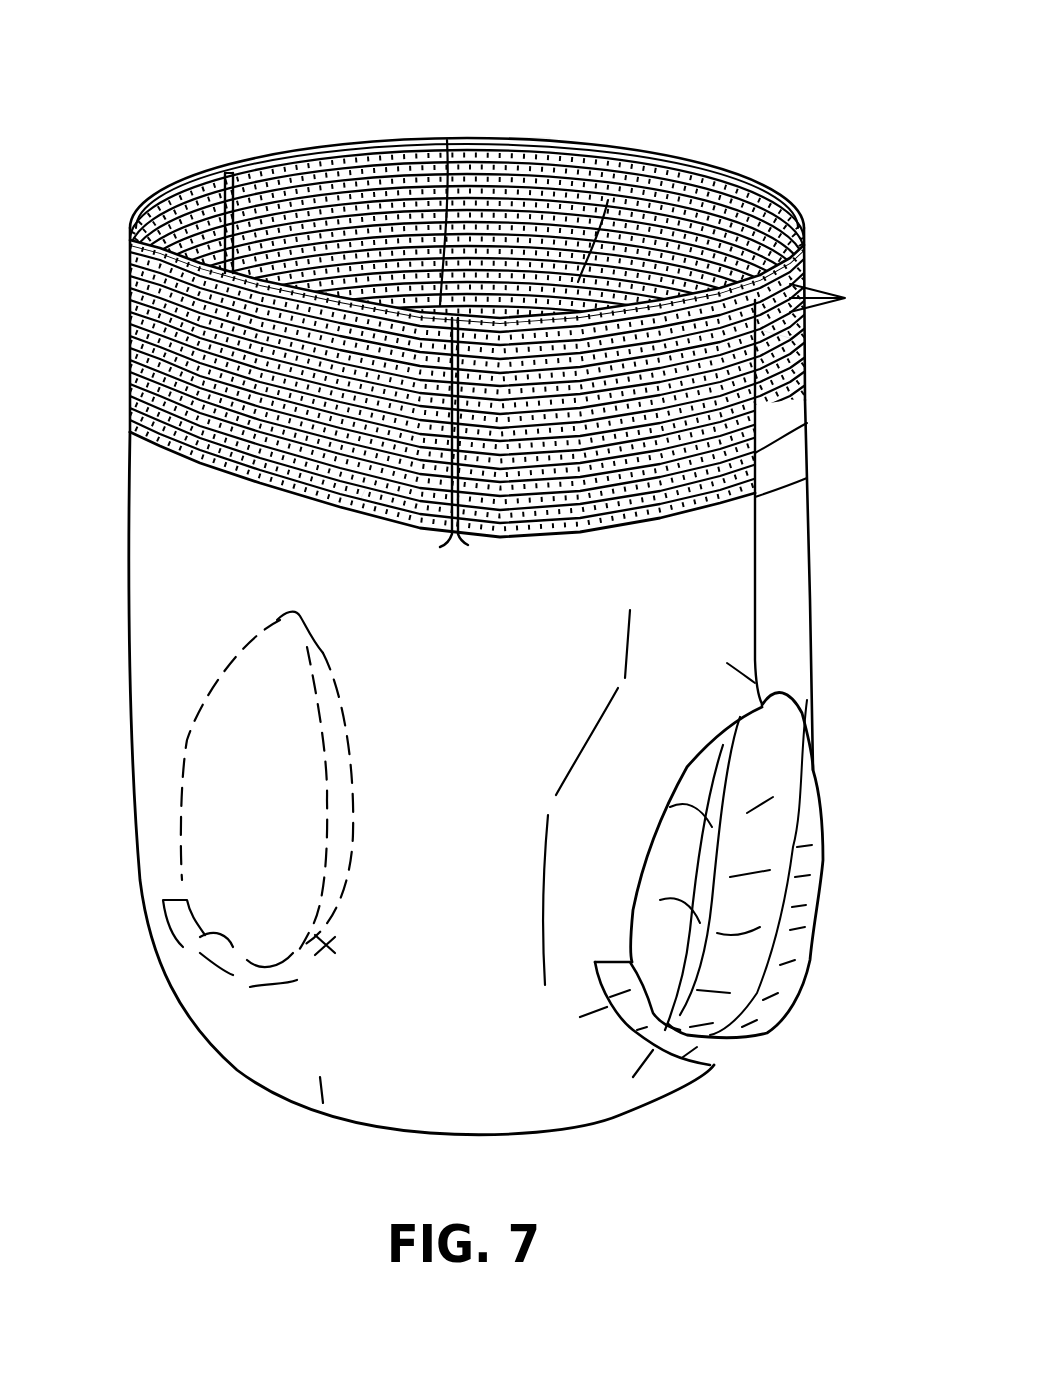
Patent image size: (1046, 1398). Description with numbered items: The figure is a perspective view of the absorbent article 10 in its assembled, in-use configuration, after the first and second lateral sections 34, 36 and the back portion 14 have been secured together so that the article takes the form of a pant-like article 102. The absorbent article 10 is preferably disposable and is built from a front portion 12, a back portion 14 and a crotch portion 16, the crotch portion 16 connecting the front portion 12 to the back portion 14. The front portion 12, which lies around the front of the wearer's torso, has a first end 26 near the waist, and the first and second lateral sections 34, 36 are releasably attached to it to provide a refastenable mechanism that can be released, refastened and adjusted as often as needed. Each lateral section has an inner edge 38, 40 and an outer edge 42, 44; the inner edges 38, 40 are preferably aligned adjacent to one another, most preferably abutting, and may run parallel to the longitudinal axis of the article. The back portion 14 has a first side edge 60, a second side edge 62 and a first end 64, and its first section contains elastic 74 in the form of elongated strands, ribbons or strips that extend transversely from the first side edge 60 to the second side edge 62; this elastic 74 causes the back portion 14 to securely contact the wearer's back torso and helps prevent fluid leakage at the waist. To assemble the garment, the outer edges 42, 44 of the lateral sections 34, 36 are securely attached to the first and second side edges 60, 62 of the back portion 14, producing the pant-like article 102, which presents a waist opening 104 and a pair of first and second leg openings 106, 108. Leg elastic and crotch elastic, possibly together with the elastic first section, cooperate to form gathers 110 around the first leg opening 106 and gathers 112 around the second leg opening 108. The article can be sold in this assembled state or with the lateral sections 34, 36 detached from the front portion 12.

The absorbent article 10 is at (812, 85).
The front portion 12 is at (135, 380).
The back portion 14 is at (684, 145).
The crotch portion 16 is at (400, 1095).
The first end 26 is at (447, 140).
The first lateral section 34 is at (365, 490).
The second lateral section 36 is at (603, 500).
The inner edge 38 is at (443, 533).
The inner edge 40 is at (482, 538).
The outer edge 42 is at (222, 175).
The outer edge 44 is at (790, 338).
The first side edge 60 is at (237, 172).
The second side edge 62 is at (803, 253).
The first end 64 is at (508, 135).
The elastic 74 is at (845, 298).
The pant-like article 102 is at (801, 232).
The waist opening 104 is at (608, 200).
The first leg opening 106 is at (230, 863).
The second leg opening 108 is at (700, 970).
The gathers 110 is at (335, 947).
The gathers 112 is at (807, 973).